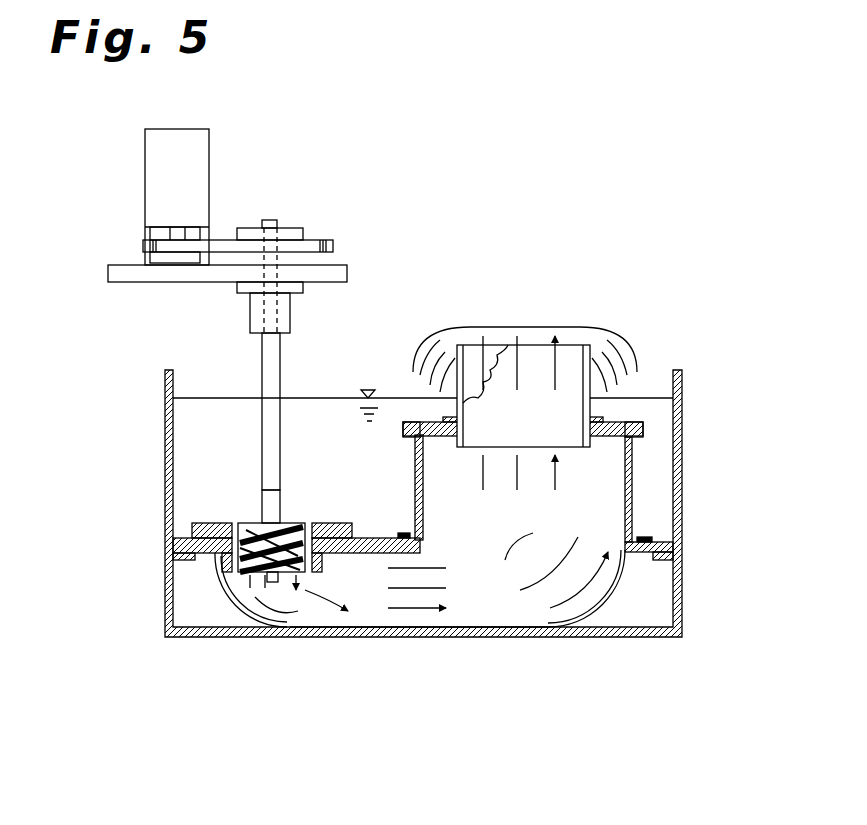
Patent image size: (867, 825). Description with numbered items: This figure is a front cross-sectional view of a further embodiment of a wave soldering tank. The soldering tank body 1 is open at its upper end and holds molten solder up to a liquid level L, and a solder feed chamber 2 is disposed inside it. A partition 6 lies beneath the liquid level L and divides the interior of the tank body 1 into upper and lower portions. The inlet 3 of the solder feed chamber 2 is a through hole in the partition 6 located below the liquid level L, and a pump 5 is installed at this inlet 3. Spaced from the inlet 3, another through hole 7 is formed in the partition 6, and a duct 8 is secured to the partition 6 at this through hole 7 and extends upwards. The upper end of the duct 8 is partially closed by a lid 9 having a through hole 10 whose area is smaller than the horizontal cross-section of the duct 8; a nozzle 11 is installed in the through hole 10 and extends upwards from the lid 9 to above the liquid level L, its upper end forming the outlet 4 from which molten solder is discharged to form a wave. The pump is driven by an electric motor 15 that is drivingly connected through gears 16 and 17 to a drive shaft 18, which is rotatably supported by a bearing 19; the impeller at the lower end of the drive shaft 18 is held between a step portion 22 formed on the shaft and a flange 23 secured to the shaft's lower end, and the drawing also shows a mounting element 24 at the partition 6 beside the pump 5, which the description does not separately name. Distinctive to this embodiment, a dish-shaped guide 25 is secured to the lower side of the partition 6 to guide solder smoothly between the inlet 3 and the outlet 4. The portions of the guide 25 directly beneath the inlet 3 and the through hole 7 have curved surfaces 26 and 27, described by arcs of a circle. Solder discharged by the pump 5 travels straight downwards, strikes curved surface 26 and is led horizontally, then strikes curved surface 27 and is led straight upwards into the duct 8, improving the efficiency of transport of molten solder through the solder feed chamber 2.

The soldering tank body 1 is at (682, 469).
The solder feed chamber 2 is at (535, 608).
The inlet 3 is at (308, 522).
The outlet 4 is at (573, 345).
The pump 5 is at (310, 573).
The partition 6 is at (168, 532).
The through hole 7 is at (633, 557).
The duct 8 is at (632, 467).
The lid 9 is at (622, 422).
The through hole 10 is at (622, 440).
The nozzle 11 is at (577, 375).
The electric motor 15 is at (193, 164).
The gear 16 is at (168, 243).
The gear 17 is at (292, 247).
The drive shaft 18 is at (268, 390).
The bearing 19 is at (258, 303).
The step portion 22 is at (270, 500).
The flange 23 is at (263, 576).
The bearing block 24 is at (197, 530).
The dish-shaped guide 25 is at (630, 635).
The curved surface 26 is at (247, 610).
The curved surface 27 is at (618, 620).
The liquid level L is at (190, 398).